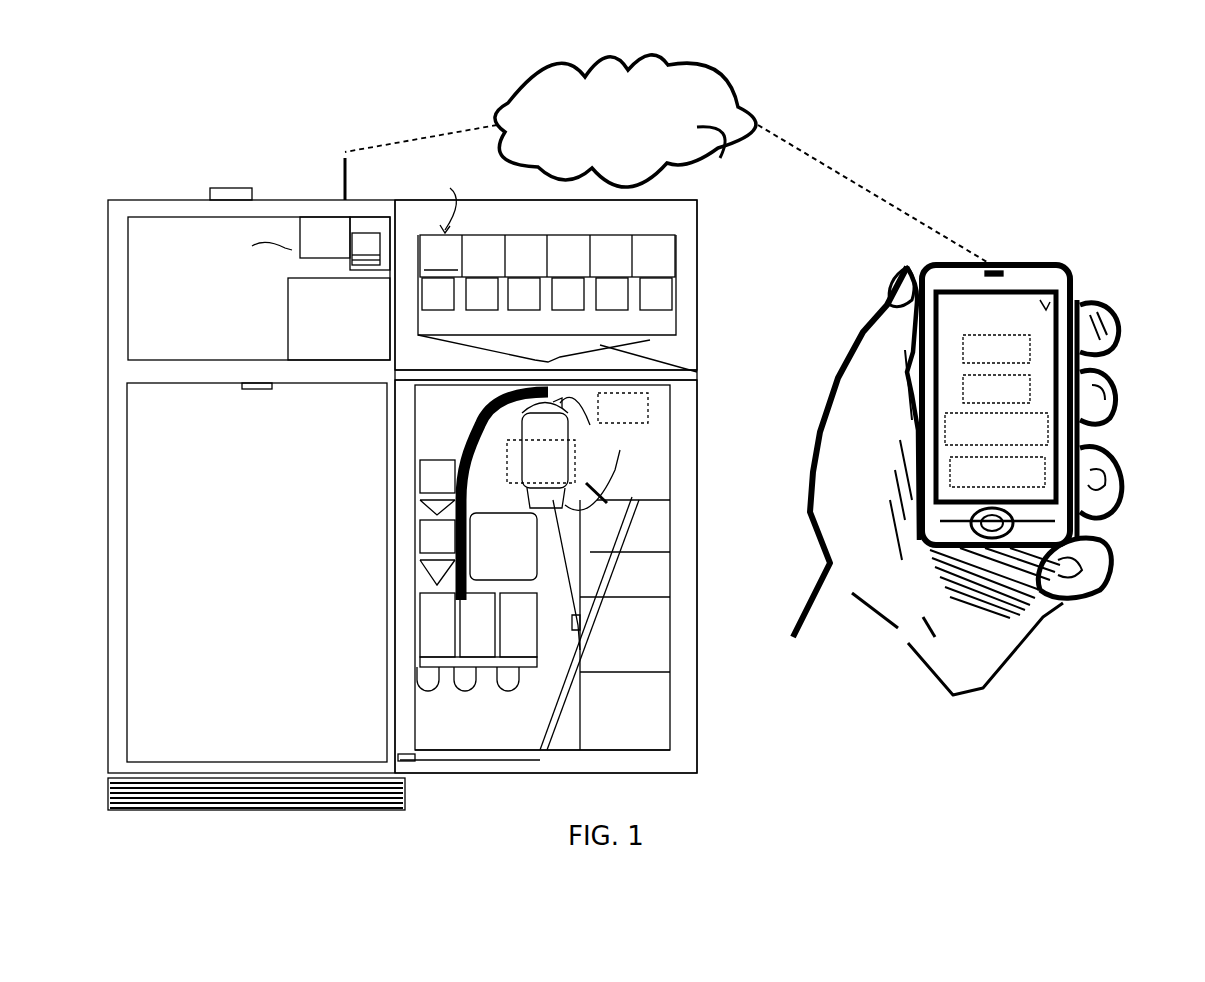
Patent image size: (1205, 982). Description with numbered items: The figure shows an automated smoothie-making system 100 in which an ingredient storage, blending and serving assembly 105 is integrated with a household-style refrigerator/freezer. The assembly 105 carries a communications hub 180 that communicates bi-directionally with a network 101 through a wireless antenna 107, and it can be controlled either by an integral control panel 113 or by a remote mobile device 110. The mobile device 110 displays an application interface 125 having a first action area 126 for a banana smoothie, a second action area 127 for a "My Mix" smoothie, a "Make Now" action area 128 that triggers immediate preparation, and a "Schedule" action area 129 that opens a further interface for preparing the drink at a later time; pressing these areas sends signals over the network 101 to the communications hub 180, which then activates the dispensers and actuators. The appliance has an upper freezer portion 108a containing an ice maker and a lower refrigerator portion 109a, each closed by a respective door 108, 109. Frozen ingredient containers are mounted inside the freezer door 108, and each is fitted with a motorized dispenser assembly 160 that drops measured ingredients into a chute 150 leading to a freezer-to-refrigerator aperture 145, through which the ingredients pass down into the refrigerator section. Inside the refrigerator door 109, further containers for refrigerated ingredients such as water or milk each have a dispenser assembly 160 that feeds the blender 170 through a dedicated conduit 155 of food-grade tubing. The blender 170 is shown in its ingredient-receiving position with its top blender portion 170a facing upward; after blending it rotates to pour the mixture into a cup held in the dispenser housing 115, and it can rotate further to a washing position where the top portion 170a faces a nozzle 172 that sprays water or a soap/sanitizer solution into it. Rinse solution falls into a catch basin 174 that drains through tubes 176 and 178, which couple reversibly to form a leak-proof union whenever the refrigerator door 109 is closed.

The automated smoothie-making system 100 is at (972, 117).
The network 101 is at (712, 58).
The ingredient storage, blending and serving assembly 105 is at (422, 476).
The wireless antenna 107 is at (345, 181).
The freezer door 108 is at (685, 212).
The upper freezer portion 108a is at (259, 288).
The refrigerator door 109 is at (690, 755).
The lower refrigerator portion 109a is at (257, 572).
The remote mobile device 110 is at (975, 460).
The integral control panel 113 is at (623, 408).
The dispenser housing 115 is at (503, 546).
The application interface 125 is at (1062, 300).
The first action area 126 is at (1032, 363).
The second action area 127 is at (1032, 395).
The "Make Now" action area 128 is at (1050, 432).
The "Schedule" action area 129 is at (1060, 522).
The freezer-to-refrigerator aperture 145 is at (255, 392).
The chute 150 is at (690, 375).
The conduit 155 is at (470, 425).
The dispenser assembly 160 is at (420, 311).
The blender 170 is at (541, 456).
The top blender portion 170a is at (588, 421).
The nozzle 172 is at (597, 482).
The catch basin 174 is at (605, 600).
The tube 176 is at (490, 763).
The tube 178 is at (380, 755).
The communications hub 180 is at (225, 188).